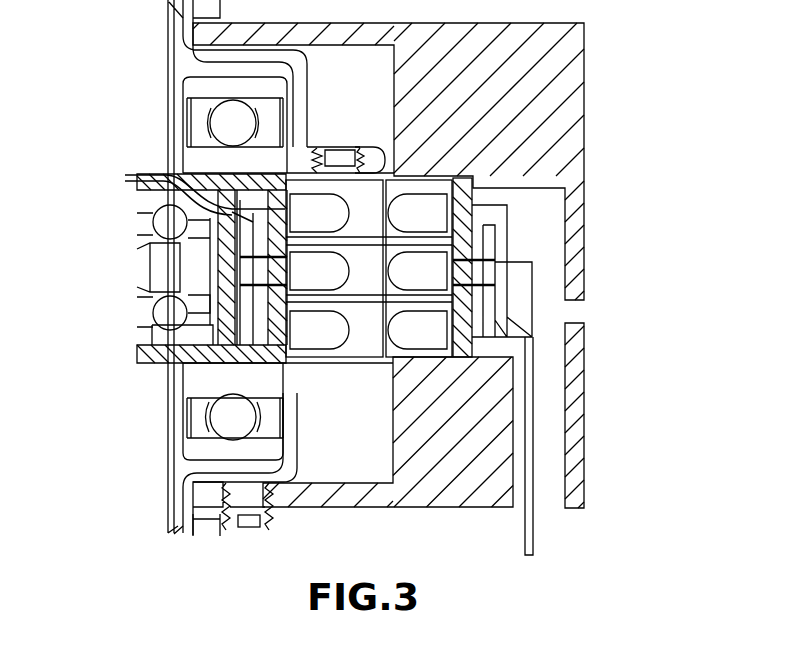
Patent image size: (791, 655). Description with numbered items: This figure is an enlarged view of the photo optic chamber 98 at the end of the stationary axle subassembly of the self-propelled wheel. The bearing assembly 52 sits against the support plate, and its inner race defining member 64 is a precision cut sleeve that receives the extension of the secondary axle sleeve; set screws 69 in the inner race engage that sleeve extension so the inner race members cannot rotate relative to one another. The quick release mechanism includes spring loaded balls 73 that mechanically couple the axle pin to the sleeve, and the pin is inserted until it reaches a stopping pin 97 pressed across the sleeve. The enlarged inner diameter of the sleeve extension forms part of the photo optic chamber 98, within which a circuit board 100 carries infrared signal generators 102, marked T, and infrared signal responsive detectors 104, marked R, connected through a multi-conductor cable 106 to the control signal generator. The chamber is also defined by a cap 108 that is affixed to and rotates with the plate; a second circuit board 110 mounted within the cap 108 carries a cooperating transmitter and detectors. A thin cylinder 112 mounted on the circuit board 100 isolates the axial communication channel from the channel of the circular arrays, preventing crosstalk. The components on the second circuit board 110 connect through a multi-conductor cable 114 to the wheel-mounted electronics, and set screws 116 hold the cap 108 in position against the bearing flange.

The bearing assembly 52 is at (233, 125).
The inner race defining member 64 is at (250, 375).
The set screws 69 is at (322, 147).
The spring loaded balls 73 is at (163, 313).
The stopping pin 97 is at (213, 326).
The photo optic chamber 98 is at (376, 278).
The circuit board 100 is at (249, 529).
The infrared signal generators 102 is at (315, 213).
The infrared signal responsive detectors 104 is at (310, 272).
The multi-conductor cable 106 is at (137, 183).
The cap 108 is at (562, 146).
The second circuit board 110 is at (463, 193).
The thin cylinder 112 is at (357, 303).
The multi-conductor cable 114 is at (535, 545).
The set screws 116 is at (250, 497).